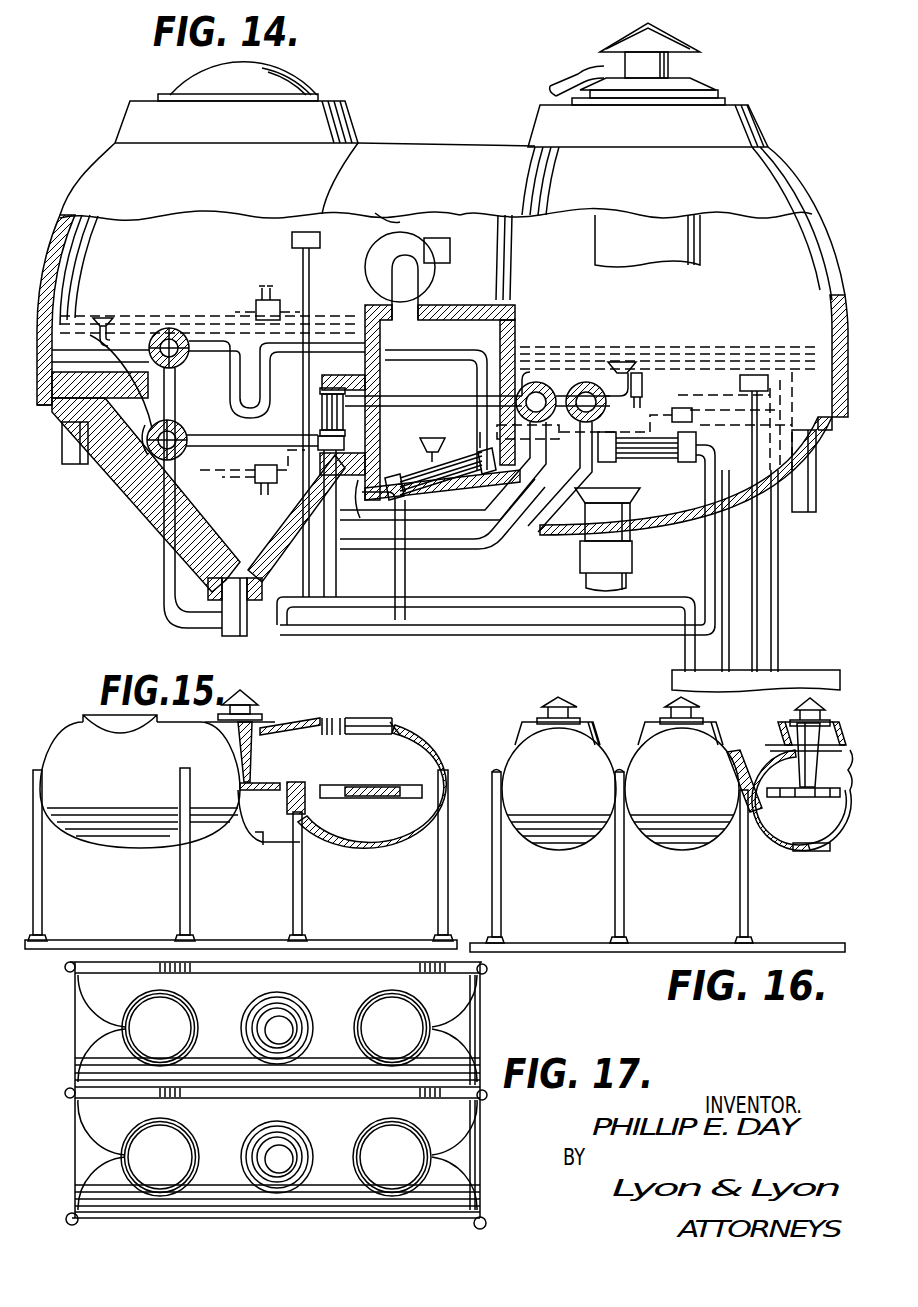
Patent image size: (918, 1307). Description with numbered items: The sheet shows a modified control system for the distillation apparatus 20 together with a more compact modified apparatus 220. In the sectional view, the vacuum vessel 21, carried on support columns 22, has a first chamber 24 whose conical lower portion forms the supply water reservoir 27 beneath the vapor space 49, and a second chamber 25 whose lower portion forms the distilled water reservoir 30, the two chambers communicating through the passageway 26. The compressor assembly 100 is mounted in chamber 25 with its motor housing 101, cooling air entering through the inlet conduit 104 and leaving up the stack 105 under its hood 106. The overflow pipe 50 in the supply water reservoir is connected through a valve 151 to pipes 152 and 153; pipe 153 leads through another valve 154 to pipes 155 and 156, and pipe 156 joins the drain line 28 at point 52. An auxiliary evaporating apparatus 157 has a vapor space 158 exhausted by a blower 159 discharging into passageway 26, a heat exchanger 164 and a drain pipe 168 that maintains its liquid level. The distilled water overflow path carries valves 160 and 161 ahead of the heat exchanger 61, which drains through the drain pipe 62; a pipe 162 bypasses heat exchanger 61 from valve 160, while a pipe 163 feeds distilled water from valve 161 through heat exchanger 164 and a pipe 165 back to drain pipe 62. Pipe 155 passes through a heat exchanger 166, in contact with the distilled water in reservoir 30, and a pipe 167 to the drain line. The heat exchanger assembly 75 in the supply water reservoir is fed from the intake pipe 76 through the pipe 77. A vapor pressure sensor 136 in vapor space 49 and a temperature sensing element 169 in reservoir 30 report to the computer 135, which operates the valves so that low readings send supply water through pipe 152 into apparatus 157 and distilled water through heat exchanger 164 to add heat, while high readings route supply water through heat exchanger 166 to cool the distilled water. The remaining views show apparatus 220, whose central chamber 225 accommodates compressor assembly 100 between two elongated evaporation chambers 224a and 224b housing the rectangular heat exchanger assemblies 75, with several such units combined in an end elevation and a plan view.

In FIG. 14, the distillation apparatus 20 is at (128, 501).
In FIG. 14, the vacuum vessel 21 is at (766, 119).
In FIG. 14, the support columns 22 is at (62, 443).
In FIG. 14, the first chamber 24 is at (52, 217).
In FIG. 14, the second chamber 25 is at (818, 215).
In FIG. 14, the passageway 26 is at (398, 220).
In FIG. 14, the supply water reservoir 27 is at (160, 501).
In FIG. 14, the drain line 28 is at (230, 633).
In FIG. 14, the distilled water reservoir 30 is at (818, 441).
In FIG. 14, the vapor space 49 is at (210, 281).
In FIG. 14, the overflow pipe 50 is at (100, 355).
In FIG. 14, the connection point 52 is at (216, 627).
In FIG. 14, the heat exchanger 61 is at (346, 412).
In FIG. 14, the drain pipe 62 is at (330, 570).
In FIG. 15, the heat exchanger assembly 75 is at (368, 786).
In FIG. 14, the intake pipe 76 is at (607, 514).
In FIG. 14, the pipe 77 is at (634, 579).
In FIG. 15, the compressor assembly 100 is at (252, 762).
In FIG. 16, the compressor assembly 100 is at (798, 797).
In FIG. 14, the motor housing 101 is at (700, 245).
In FIG. 14, the inlet conduit 104 is at (572, 70).
In FIG. 14, the stack 105 is at (665, 67).
In FIG. 14, the hood 106 is at (660, 41).
In FIG. 14, the computer 135 is at (672, 683).
In FIG. 14, the vapor pressure sensor 136 is at (312, 238).
In FIG. 14, the valve 151 is at (156, 366).
In FIG. 14, the pipe 152 is at (222, 330).
In FIG. 14, the pipe 153 is at (153, 450).
In FIG. 14, the valve 154 is at (146, 448).
In FIG. 14, the pipe 155 is at (208, 446).
In FIG. 14, the pipe 156 is at (165, 553).
In FIG. 14, the auxiliary evaporating apparatus 157 is at (445, 302).
In FIG. 14, the vapor space 158 is at (436, 397).
In FIG. 14, the blower 159 is at (405, 243).
In FIG. 14, the valve 160 is at (588, 382).
In FIG. 14, the valve 161 is at (540, 382).
In FIG. 14, the pipe 162 is at (452, 541).
In FIG. 14, the pipe 163 is at (566, 496).
In FIG. 14, the heat exchanger 164 is at (445, 499).
In FIG. 14, the pipe 165 is at (365, 496).
In FIG. 14, the heat exchanger 166 is at (652, 456).
In FIG. 14, the pipe 167 is at (712, 585).
In FIG. 14, the drain pipe 168 is at (400, 581).
In FIG. 14, the temperature sensing element 169 is at (756, 372).
In FIG. 15, the distillation apparatus 220 is at (403, 722).
In FIG. 16, the distillation apparatus 220 is at (551, 847).
In FIG. 17, the distillation apparatus 220 is at (484, 1018).
In FIG. 15, the evaporation chamber 224a is at (430, 750).
In FIG. 15, the evaporation chamber 224b is at (55, 747).
In FIG. 15, the chamber 225 is at (272, 723).
In FIG. 16, the chamber 225 is at (832, 852).